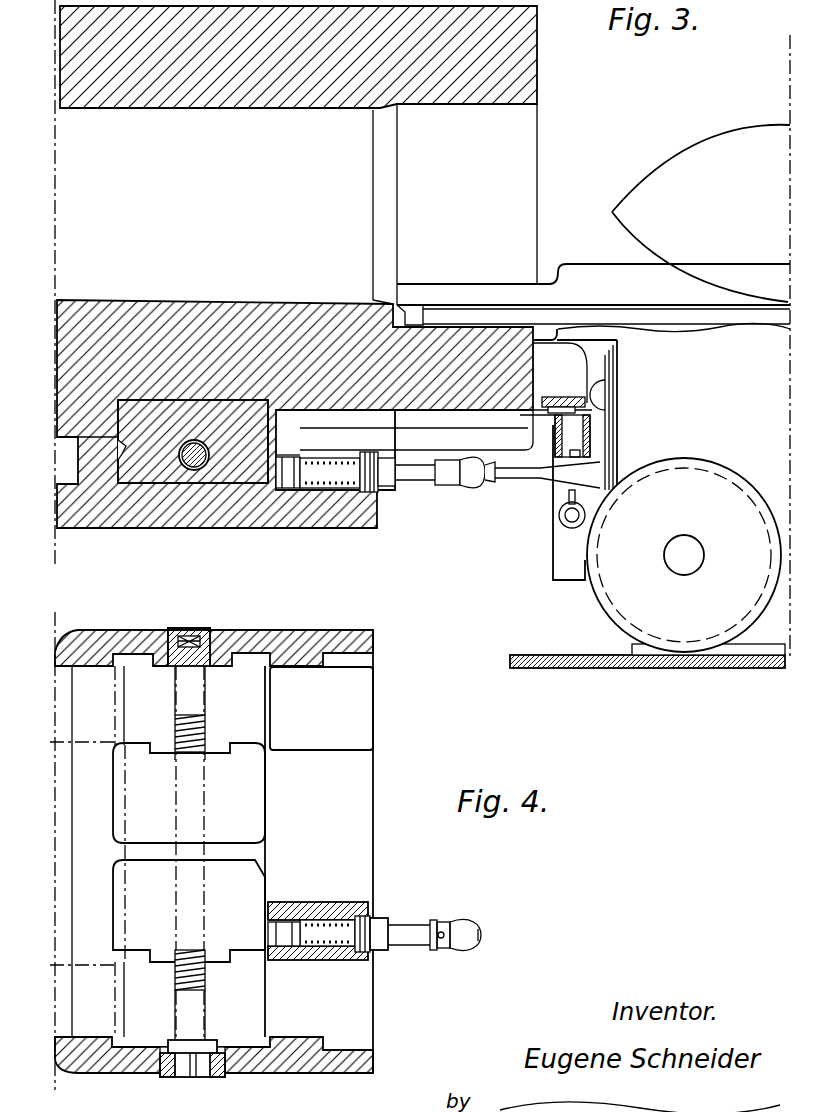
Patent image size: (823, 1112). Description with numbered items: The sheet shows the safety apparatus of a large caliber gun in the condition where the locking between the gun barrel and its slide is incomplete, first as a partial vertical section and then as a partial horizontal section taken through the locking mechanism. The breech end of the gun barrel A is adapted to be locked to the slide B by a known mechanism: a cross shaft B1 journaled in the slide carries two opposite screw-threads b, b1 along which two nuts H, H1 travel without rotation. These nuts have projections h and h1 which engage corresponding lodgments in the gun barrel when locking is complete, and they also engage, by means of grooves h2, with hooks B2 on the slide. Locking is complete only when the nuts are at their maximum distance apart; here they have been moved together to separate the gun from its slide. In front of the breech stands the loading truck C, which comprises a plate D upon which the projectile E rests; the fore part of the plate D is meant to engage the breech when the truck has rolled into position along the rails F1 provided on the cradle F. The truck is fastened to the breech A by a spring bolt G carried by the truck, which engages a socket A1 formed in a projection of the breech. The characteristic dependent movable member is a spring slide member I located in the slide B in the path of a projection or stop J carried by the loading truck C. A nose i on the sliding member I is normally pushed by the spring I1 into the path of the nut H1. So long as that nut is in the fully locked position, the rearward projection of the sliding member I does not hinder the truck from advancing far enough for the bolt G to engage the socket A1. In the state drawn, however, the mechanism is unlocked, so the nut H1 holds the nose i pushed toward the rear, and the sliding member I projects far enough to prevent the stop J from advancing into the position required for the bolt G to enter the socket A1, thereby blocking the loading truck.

In FIG. 3, the breech end of gun barrel A is at (515, 70).
In FIG. 3, the plate D is at (604, 278).
In FIG. 3, the projectile E is at (711, 160).
In FIG. 3, the slide B is at (365, 518).
In FIG. 4, the slide B is at (284, 645).
In FIG. 3, the nut H1 is at (147, 470).
In FIG. 4, the nut H1 is at (232, 913).
In FIG. 3, the cross shaft B1 is at (195, 464).
In FIG. 4, the cross shaft B1 is at (193, 683).
In FIG. 3, the grooves h2 is at (78, 452).
In FIG. 3, the hooks B2 is at (120, 457).
In FIG. 4, the hooks B2 is at (118, 698).
In FIG. 3, the nose i is at (287, 476).
In FIG. 4, the nose i is at (280, 933).
In FIG. 3, the spring I1 is at (330, 480).
In FIG. 4, the spring I1 is at (333, 907).
In FIG. 3, the spring slide member I is at (470, 480).
In FIG. 4, the spring slide member I is at (462, 925).
In FIG. 3, the projection or stop J is at (521, 480).
In FIG. 3, the socket A1 is at (563, 406).
In FIG. 3, the spring bolt G is at (575, 435).
In FIG. 3, the loading truck C is at (558, 560).
In FIG. 3, the cradle F is at (556, 660).
In FIG. 3, the rails F1 is at (641, 655).
In FIG. 4, the nut H is at (227, 815).
In FIG. 4, the projection h is at (113, 803).
In FIG. 4, the projection h1 is at (115, 887).
In FIG. 4, the screw-thread b is at (212, 722).
In FIG. 4, the screw-thread b1 is at (210, 978).